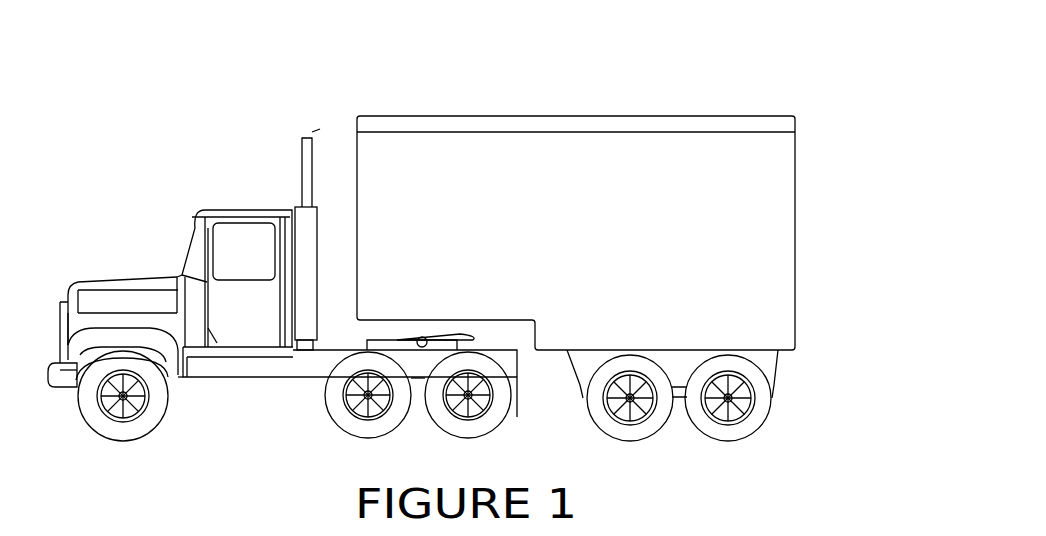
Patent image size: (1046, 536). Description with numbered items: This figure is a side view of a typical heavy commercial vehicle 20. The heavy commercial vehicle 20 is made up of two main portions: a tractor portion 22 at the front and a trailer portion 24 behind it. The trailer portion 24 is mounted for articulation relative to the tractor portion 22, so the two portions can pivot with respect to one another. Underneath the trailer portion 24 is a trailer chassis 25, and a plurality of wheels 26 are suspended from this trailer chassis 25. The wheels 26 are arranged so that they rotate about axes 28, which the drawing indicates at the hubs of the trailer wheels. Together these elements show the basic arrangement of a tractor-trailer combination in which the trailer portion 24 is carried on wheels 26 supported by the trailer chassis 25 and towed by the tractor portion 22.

The heavy commercial vehicle 20 is at (653, 105).
The tractor portion 22 is at (150, 270).
The trailer portion 24 is at (795, 165).
The trailer chassis 25 is at (778, 367).
The wheels 26 is at (587, 400).
The axes 28 is at (618, 421).